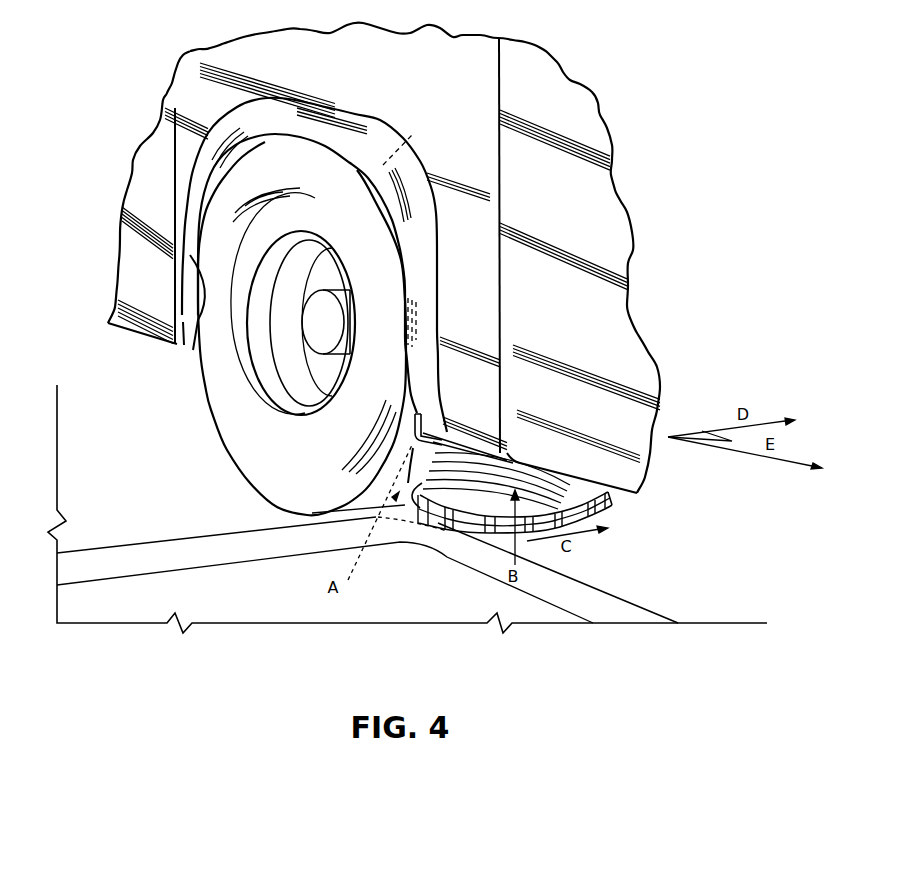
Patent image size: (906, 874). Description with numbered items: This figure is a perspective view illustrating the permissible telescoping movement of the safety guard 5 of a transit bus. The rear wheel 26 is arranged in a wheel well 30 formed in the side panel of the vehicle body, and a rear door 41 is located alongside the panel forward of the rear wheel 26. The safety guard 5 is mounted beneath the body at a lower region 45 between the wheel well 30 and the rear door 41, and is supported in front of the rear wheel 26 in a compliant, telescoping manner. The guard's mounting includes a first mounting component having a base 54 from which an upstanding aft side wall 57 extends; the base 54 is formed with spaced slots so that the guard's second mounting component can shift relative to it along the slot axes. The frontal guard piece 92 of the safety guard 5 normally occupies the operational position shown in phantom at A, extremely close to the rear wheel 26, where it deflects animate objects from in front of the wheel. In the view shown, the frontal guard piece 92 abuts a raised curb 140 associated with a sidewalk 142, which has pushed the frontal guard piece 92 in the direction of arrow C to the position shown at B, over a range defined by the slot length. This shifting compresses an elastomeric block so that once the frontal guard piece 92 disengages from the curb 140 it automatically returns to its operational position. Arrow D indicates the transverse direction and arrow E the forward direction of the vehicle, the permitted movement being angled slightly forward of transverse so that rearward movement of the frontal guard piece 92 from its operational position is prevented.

The safety guard 5 is at (445, 541).
The rear wheel 26 is at (222, 418).
The wheel well 30 is at (183, 342).
The rear door 41 is at (613, 213).
The lower region 45 is at (463, 403).
The base 54 is at (411, 450).
The aft side wall 57 is at (417, 413).
The frontal guard piece 92 is at (462, 503).
The raised curb 140 is at (74, 562).
The sidewalk 142 is at (125, 588).